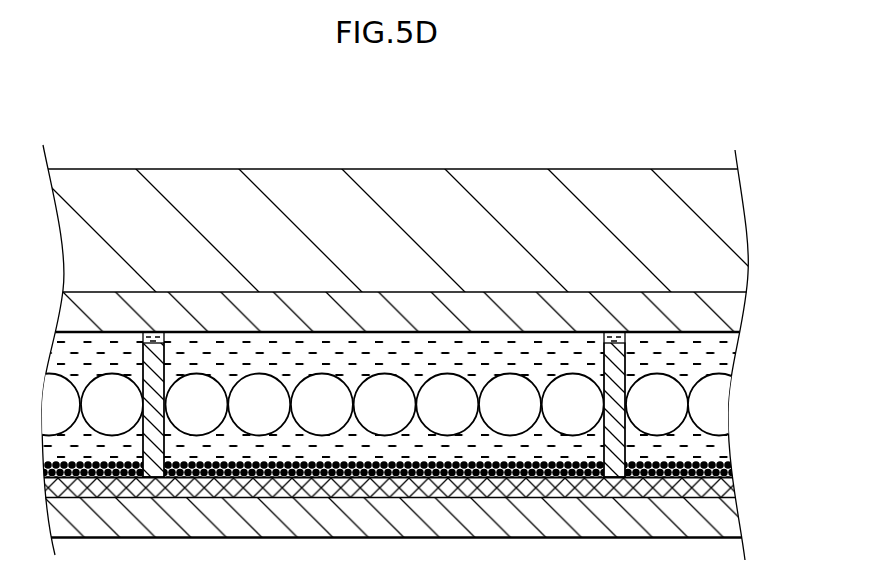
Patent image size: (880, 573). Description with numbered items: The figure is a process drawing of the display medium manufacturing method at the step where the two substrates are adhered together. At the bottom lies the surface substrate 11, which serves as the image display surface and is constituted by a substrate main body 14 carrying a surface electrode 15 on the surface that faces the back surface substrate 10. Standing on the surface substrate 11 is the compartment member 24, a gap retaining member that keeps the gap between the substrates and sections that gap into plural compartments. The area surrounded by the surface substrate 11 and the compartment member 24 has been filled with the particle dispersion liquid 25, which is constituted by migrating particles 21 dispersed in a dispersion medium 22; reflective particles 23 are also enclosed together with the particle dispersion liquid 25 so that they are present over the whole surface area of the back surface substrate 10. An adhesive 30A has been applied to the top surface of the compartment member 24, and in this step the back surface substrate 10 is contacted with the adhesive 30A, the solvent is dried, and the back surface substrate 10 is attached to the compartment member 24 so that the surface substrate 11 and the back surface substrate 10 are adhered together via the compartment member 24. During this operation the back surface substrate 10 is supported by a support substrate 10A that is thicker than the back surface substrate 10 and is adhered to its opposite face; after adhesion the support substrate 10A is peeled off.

The support substrate 10A is at (733, 220).
The back surface substrate 10 is at (733, 313).
The particle dispersion liquid 25 is at (492, 118).
The migrating particles 21 is at (390, 462).
The dispersion medium 22 is at (466, 352).
The reflective particles 23 is at (328, 385).
The compartment member 24 is at (142, 358).
The adhesive 30A is at (152, 339).
The surface electrode 15 is at (712, 492).
The substrate main body 14 is at (713, 522).
The surface substrate 11 is at (788, 475).